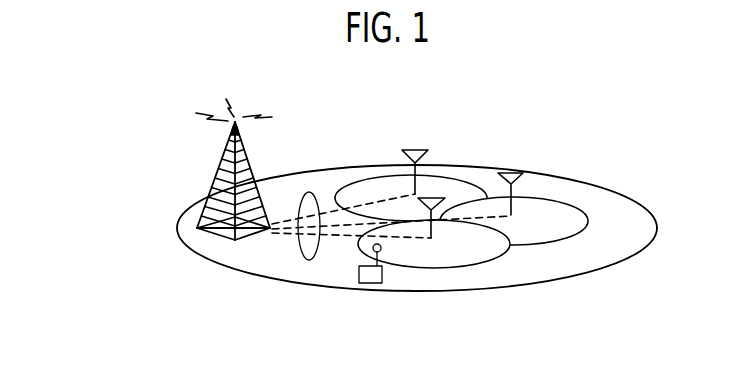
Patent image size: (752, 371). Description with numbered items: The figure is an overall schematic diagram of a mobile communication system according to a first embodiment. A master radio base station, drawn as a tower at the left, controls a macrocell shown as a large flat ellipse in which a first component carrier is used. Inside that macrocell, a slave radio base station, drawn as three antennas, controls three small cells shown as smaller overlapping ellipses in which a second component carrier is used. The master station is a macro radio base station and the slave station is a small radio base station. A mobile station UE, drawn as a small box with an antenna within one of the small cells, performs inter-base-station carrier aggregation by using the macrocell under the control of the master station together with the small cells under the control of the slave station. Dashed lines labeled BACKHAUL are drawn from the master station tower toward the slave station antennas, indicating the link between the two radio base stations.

The mobile station UE is at (356, 263).
The backhaul BACKHAUL is at (312, 260).